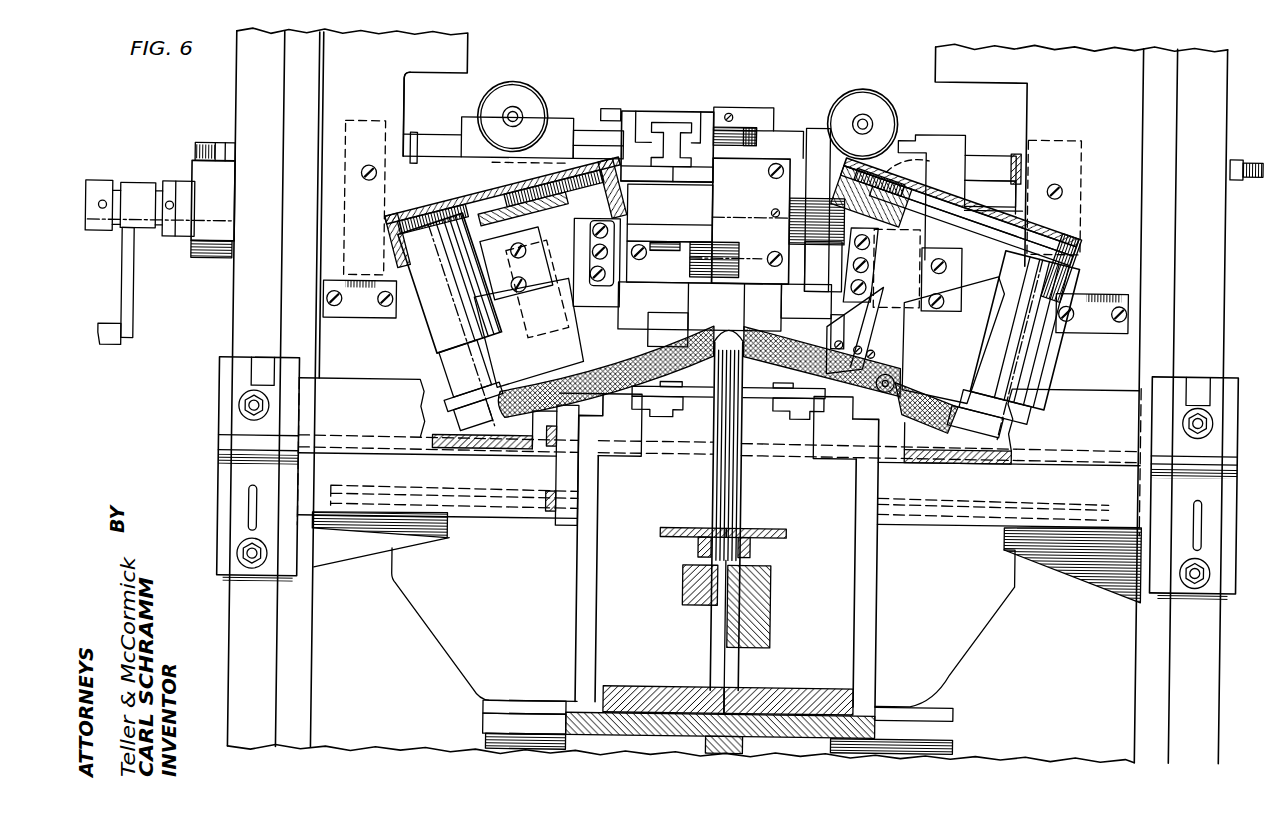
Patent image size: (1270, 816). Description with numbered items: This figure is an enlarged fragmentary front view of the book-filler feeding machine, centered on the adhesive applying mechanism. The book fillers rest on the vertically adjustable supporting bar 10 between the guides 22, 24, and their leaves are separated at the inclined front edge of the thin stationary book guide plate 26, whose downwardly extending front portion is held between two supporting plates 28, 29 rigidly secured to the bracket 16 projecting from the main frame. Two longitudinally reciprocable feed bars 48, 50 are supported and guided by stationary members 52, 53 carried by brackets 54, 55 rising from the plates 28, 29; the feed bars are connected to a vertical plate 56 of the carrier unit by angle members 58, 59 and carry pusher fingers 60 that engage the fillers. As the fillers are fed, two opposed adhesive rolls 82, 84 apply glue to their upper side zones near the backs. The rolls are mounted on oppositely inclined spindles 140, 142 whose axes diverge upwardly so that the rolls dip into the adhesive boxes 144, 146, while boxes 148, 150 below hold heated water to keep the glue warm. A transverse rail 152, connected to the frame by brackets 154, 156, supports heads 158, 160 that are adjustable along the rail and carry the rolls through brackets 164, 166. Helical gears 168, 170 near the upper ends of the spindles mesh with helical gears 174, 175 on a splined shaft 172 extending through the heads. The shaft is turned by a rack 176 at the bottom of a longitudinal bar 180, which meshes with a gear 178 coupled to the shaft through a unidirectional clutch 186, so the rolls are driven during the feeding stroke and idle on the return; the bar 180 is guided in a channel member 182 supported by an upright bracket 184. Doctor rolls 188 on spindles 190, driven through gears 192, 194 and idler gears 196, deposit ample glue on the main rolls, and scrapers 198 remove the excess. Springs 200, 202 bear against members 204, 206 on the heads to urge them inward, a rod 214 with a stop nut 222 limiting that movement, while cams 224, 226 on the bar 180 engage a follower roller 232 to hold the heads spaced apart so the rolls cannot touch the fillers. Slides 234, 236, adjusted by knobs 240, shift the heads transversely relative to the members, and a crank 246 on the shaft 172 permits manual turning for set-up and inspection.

The bar 10 is at (751, 565).
The bracket 16 is at (960, 720).
The guide 22 is at (672, 528).
The guide 24 is at (770, 528).
The book guide plate 26 is at (716, 503).
The supporting plate 28 is at (642, 687).
The supporting plate 29 is at (786, 687).
The feed bar 48 is at (675, 412).
The feed bar 50 is at (782, 418).
The stationary member 52 is at (662, 426).
The stationary member 53 is at (805, 425).
The bracket 54 is at (579, 585).
The bracket 55 is at (866, 582).
The vertical plate 56 is at (773, 298).
The angle member 58 is at (668, 313).
The angle member 59 is at (803, 330).
The pusher finger 60 is at (700, 400).
The adhesive roll 82 is at (657, 362).
The adhesive roll 84 is at (808, 355).
The spindle 140 is at (563, 346).
The spindle 142 is at (896, 330).
The adhesive box 144 is at (356, 388).
The adhesive box 146 is at (1058, 398).
The box 148 is at (480, 525).
The box 150 is at (955, 540).
The rail 152 is at (1020, 186).
The bracket 154 is at (365, 183).
The bracket 156 is at (1080, 146).
The head 158 is at (612, 219).
The head 160 is at (836, 272).
The bracket 164 is at (551, 293).
The bracket 166 is at (953, 306).
The helical gear 168 is at (667, 177).
The helical gear 170 is at (840, 195).
The shaft 172 is at (1020, 207).
The helical gear 174 is at (495, 163).
The helical gear 175 is at (927, 162).
The rack 176 is at (670, 168).
The gear 178 is at (664, 252).
The bar 180 is at (670, 125).
The channel member 182 is at (708, 170).
The upright bracket 184 is at (557, 474).
The unidirectional clutch 186 is at (698, 283).
The doctor roll 188 is at (486, 424).
The spindle 190 is at (442, 352).
The gear 192 is at (708, 206).
The gear 194 is at (410, 220).
The idler gear 196 is at (469, 205).
The scraper 198 is at (895, 376).
The spring 200 is at (402, 125).
The spring 202 is at (1016, 150).
The member 204 is at (437, 142).
The member 206 is at (973, 158).
The rod 214 is at (1252, 172).
The nut 222 is at (1236, 153).
The cam 224 is at (643, 112).
The cam 226 is at (214, 149).
The roller 232 is at (745, 127).
The slide 234 is at (548, 122).
The slide 236 is at (907, 132).
The knob 240 is at (518, 92).
The crank 246 is at (132, 311).